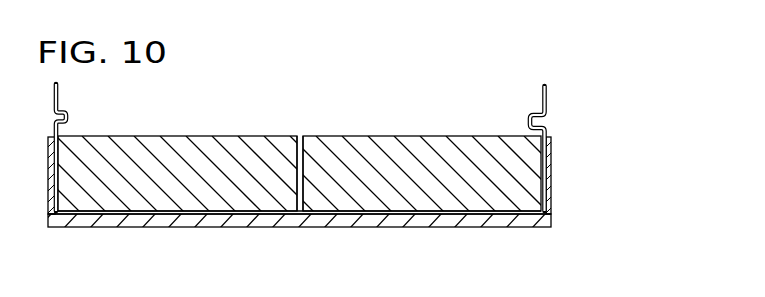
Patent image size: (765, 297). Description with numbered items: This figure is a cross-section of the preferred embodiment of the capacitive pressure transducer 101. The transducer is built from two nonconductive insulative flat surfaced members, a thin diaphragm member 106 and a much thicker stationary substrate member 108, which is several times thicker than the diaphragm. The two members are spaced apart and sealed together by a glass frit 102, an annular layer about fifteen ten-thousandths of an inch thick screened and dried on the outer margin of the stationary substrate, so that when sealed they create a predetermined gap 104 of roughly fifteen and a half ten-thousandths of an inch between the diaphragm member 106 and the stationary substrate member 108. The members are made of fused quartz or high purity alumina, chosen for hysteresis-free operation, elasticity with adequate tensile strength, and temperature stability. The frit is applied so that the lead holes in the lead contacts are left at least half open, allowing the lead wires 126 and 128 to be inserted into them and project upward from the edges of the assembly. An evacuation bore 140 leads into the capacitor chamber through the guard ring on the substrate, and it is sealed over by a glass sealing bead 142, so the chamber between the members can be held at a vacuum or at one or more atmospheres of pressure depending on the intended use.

The capacitive pressure transducer 101 is at (575, 166).
The glass frit 102 is at (523, 216).
The predetermined gap 104 is at (330, 215).
The diaphragm member 106 is at (418, 220).
The stationary substrate member 108 is at (427, 155).
The lead wire 126 is at (58, 105).
The lead wire 128 is at (545, 87).
The evacuation bore 140 is at (288, 185).
The glass sealing bead 142 is at (303, 133).